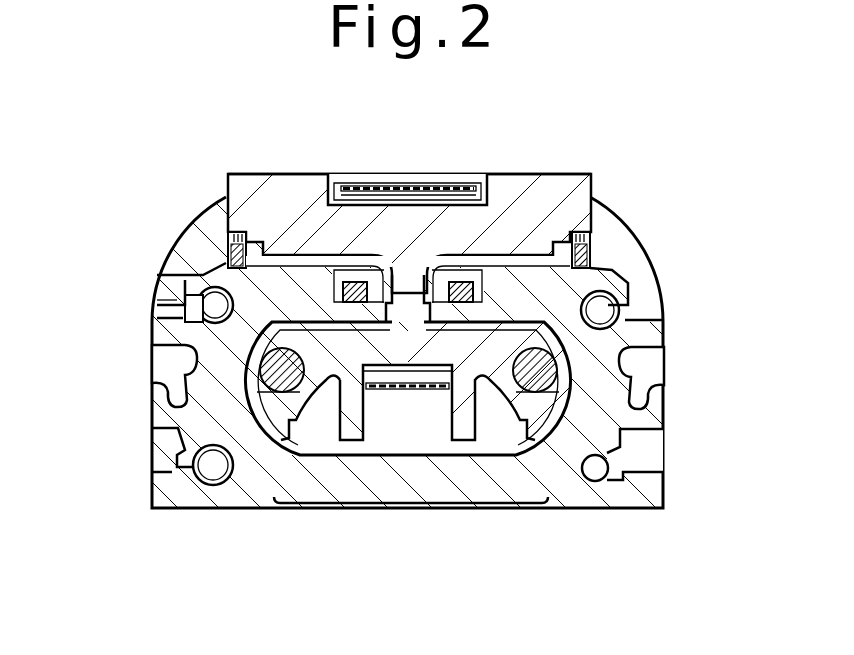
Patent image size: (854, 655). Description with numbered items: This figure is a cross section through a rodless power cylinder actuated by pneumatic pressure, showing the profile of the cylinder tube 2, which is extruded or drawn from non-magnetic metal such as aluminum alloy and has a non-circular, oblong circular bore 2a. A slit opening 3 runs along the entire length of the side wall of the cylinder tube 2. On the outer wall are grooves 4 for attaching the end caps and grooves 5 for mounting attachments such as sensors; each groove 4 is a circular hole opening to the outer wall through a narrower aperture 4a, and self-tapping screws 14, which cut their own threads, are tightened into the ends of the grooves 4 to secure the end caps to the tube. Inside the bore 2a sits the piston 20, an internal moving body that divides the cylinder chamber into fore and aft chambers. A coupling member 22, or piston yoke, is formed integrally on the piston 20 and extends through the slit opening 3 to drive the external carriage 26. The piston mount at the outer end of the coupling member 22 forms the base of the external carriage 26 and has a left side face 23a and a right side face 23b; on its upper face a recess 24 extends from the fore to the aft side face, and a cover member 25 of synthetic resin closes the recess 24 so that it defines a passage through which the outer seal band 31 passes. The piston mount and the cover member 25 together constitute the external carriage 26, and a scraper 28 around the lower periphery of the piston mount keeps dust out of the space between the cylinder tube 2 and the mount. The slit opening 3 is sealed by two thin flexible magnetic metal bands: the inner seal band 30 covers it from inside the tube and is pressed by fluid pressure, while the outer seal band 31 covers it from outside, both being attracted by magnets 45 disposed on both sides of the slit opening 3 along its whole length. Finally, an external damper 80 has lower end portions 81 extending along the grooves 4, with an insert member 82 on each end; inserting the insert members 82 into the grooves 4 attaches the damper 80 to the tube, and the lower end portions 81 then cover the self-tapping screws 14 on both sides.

The cylinder tube 2 is at (450, 497).
The bore 2a is at (417, 455).
The slit opening 3 is at (373, 217).
The groove 4 is at (633, 283).
The aperture 4a is at (158, 455).
The groove 5 is at (173, 397).
The self-tapping screw 14 is at (200, 277).
The piston 20 is at (557, 420).
The coupling member 22 is at (322, 290).
The left side face 23a is at (540, 182).
The right side face 23b is at (240, 185).
The recess 24 is at (372, 182).
The cover member 25 is at (412, 186).
The external carriage 26 is at (605, 170).
The scraper 28 is at (590, 248).
The inner seal band 30 is at (387, 390).
The outer seal band 31 is at (447, 188).
The magnets 45 is at (340, 285).
The external damper 80 is at (648, 290).
The lower end portion 81 is at (173, 303).
The insert member 82 is at (157, 332).